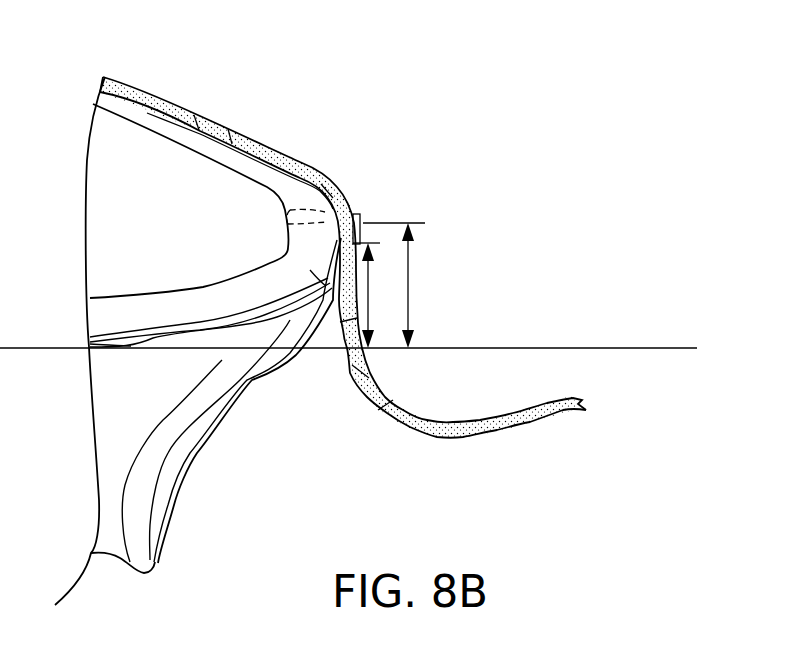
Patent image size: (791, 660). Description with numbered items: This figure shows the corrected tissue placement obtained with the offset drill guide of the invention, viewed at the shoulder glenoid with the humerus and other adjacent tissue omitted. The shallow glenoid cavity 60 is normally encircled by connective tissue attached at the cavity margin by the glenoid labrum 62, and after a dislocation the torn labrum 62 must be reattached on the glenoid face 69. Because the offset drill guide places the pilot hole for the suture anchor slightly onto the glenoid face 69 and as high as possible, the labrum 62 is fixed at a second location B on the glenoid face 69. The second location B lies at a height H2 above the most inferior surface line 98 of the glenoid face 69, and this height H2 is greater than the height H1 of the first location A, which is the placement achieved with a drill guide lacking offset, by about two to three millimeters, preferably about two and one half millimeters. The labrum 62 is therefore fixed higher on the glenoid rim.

The glenoid cavity 60 is at (113, 153).
The glenoid labrum 62 is at (490, 417).
The glenoid face 69 is at (325, 300).
The most inferior surface line 98 is at (130, 346).
The first location A is at (342, 233).
The second location B is at (350, 207).
The height of first location H1 is at (379, 295).
The height of second location H2 is at (404, 285).